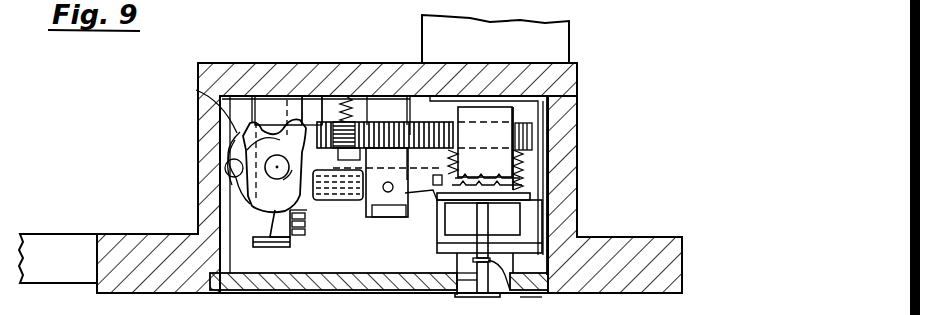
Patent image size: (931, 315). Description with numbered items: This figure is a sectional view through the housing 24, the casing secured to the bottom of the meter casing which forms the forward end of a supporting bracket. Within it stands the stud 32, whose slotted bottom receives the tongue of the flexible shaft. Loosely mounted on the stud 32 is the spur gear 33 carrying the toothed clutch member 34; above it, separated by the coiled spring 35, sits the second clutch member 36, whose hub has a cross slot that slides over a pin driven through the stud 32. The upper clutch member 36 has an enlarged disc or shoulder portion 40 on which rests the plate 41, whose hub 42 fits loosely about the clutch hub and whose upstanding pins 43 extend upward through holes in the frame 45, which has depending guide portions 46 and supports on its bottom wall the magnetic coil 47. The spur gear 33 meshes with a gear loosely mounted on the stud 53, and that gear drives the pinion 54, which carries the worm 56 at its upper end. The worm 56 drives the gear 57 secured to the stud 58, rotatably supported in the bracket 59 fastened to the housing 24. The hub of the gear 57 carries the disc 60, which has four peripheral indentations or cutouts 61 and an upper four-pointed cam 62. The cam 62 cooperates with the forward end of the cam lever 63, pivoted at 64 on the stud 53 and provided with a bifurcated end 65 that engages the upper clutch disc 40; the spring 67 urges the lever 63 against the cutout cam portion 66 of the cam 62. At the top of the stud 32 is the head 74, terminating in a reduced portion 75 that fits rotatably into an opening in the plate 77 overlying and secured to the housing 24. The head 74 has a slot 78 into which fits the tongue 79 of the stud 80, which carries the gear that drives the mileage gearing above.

The housing 24 is at (573, 77).
The stud 32 is at (386, 135).
The spur gear 33 is at (533, 135).
The toothed clutch member 34 is at (481, 168).
The coiled spring 35 is at (523, 177).
The second clutch member 36 is at (528, 188).
The disc or shoulder portion 40 is at (532, 197).
The plate 41 is at (527, 210).
The hub 42 is at (537, 226).
The upstanding pins 43 is at (473, 222).
The frame 45 is at (543, 123).
The depending guide portions 46 is at (456, 258).
The magnetic coil 47 is at (513, 115).
The stud 53 is at (378, 218).
The pinion 54 is at (309, 120).
The worm 56 is at (345, 205).
The gear 57 is at (288, 108).
The stud 58 is at (235, 178).
The bracket 59 is at (270, 110).
The disc 60 is at (222, 142).
The peripheral indentations or cutouts 61 is at (260, 130).
The four-pointed cam 62 is at (196, 90).
The cam lever 63 is at (320, 208).
The pivot 64 is at (390, 217).
The bifurcated end 65 is at (427, 190).
The cutout cam portion 66 is at (224, 152).
The spring 67 is at (362, 108).
The head 74 is at (455, 267).
The reduced portion 75 is at (463, 280).
The plate 77 is at (343, 290).
The slot 78 is at (530, 297).
The tongue 79 is at (482, 288).
The stud 80 is at (501, 296).